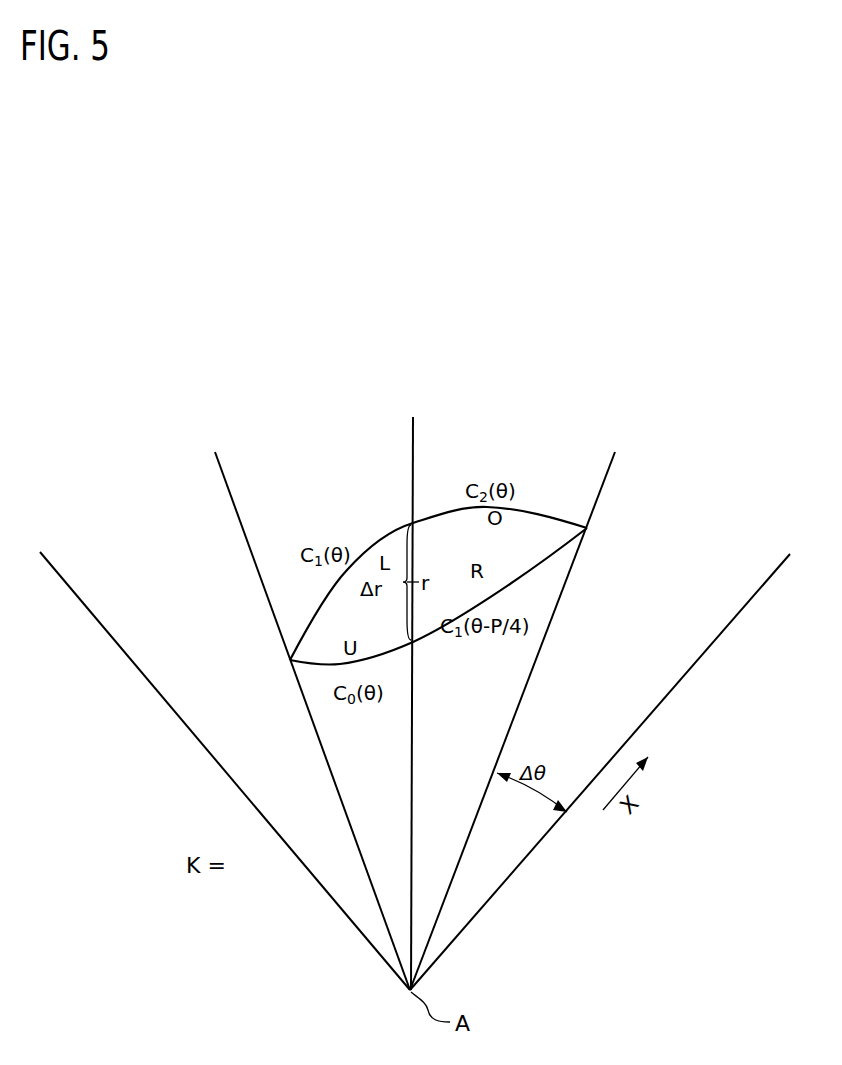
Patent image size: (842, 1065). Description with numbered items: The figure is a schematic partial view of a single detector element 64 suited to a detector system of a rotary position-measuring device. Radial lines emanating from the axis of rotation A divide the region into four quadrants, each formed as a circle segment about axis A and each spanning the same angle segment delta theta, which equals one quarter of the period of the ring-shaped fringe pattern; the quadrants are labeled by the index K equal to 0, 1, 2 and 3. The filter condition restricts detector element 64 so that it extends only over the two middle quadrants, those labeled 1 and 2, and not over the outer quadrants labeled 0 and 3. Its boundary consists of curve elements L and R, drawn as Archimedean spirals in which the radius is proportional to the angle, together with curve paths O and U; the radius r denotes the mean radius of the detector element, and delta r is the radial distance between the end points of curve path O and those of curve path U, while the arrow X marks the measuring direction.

The detector element 64 is at (343, 512).
The quadrant K0 0 is at (312, 721).
The quadrant K1 1 is at (392, 703).
The quadrant K2 2 is at (512, 721).
The quadrant K3 3 is at (600, 772).